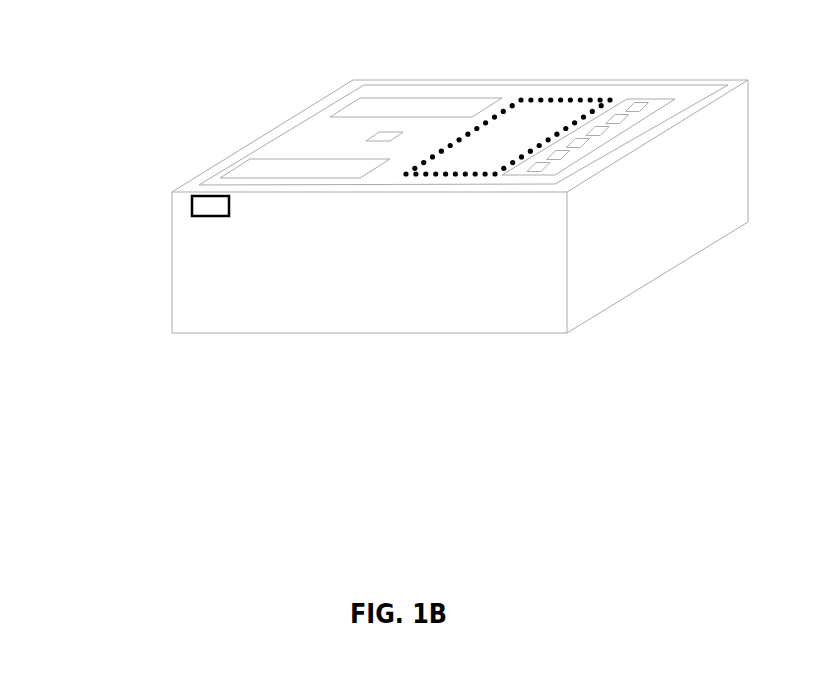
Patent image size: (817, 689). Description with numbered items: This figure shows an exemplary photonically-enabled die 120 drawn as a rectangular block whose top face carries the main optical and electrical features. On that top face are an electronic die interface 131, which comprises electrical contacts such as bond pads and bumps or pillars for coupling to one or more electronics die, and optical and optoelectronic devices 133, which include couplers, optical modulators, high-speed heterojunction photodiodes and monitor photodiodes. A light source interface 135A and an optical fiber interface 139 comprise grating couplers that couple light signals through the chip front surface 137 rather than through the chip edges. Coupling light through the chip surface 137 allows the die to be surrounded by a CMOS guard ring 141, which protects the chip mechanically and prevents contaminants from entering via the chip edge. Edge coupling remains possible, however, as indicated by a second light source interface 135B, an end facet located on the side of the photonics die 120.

The photonically-enabled die 120 is at (460, 206).
The electronic die interface 131 is at (542, 104).
The optical and optoelectronic devices 133 is at (423, 108).
The light source interface 135A is at (380, 134).
The light source interface 135B is at (192, 206).
The chip front surface 137 is at (497, 91).
The optical fiber interface 139 is at (648, 98).
The CMOS guard ring 141 is at (730, 85).